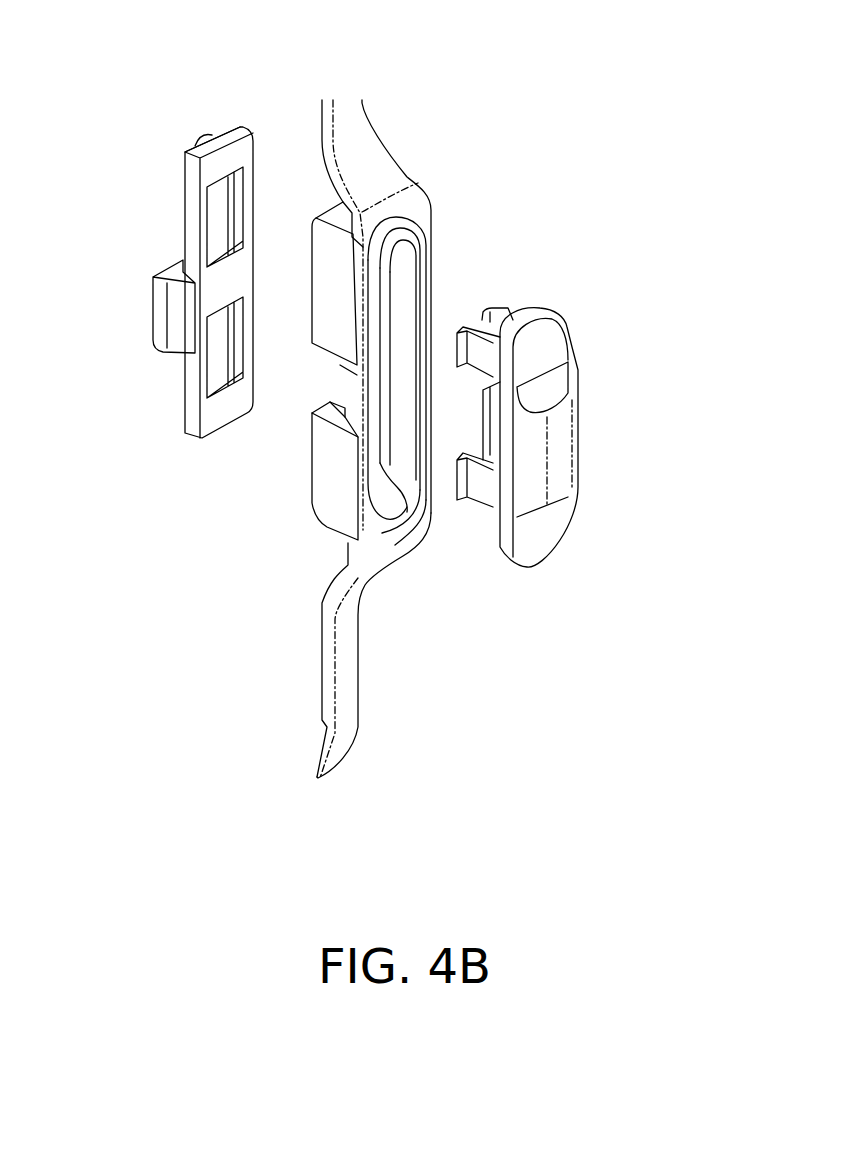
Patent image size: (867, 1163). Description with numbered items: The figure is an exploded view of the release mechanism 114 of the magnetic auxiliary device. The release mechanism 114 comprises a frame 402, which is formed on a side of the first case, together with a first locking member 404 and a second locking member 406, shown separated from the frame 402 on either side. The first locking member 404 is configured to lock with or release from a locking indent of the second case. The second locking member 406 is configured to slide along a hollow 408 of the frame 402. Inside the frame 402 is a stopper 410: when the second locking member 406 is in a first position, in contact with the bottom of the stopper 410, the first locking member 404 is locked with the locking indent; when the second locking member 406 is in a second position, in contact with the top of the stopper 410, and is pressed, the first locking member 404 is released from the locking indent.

The release mechanism 114 is at (562, 30).
The frame 402 is at (327, 280).
The first locking member 404 is at (163, 318).
The second locking member 406 is at (560, 453).
The hollow 408 is at (335, 393).
The stopper 410 is at (377, 473).